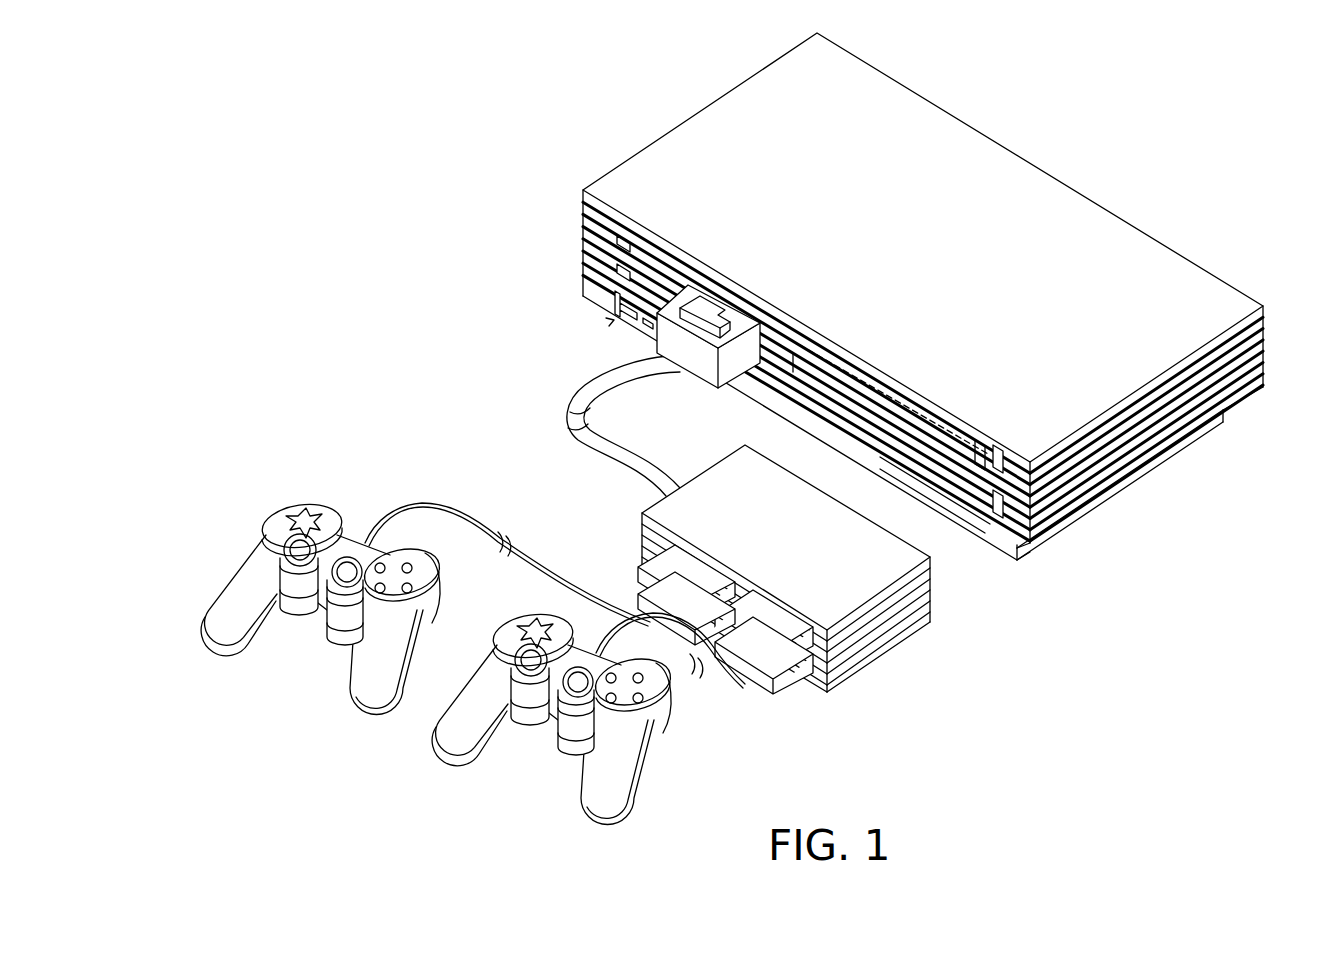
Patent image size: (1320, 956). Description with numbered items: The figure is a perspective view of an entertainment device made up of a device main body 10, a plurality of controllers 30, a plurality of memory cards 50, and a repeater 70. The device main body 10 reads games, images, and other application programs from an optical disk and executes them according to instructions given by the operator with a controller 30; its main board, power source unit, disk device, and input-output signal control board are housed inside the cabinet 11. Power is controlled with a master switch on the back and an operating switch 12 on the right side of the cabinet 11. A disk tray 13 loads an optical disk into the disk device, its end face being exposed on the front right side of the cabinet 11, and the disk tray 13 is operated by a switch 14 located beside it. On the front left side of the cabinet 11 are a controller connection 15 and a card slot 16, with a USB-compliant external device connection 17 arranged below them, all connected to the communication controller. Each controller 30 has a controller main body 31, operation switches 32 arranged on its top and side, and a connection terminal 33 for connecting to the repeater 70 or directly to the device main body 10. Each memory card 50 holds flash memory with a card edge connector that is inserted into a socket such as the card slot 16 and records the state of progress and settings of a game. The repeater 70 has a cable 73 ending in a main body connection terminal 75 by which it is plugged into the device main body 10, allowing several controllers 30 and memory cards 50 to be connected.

The device main body 10 is at (1073, 150).
The cabinet 11 is at (648, 170).
The operating switch 12 is at (1000, 455).
The disk tray 13 is at (988, 455).
The switch 14 is at (1018, 540).
The controller connection 15 is at (600, 296).
The card slot 16 is at (596, 250).
The external device connection 17 is at (612, 320).
The controller 30 is at (230, 578).
The controller main body 31 is at (270, 530).
The operation switches 32 is at (296, 514).
The connection terminal 33 is at (645, 602).
The memory card 50 is at (660, 560).
The repeater 70 is at (852, 592).
The cable 73 is at (592, 388).
The main body connection terminal 75 is at (745, 380).